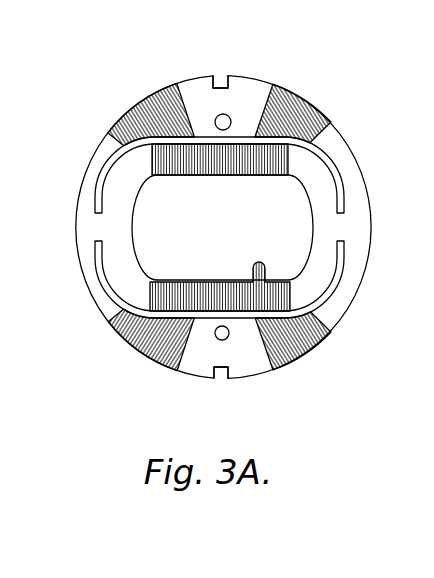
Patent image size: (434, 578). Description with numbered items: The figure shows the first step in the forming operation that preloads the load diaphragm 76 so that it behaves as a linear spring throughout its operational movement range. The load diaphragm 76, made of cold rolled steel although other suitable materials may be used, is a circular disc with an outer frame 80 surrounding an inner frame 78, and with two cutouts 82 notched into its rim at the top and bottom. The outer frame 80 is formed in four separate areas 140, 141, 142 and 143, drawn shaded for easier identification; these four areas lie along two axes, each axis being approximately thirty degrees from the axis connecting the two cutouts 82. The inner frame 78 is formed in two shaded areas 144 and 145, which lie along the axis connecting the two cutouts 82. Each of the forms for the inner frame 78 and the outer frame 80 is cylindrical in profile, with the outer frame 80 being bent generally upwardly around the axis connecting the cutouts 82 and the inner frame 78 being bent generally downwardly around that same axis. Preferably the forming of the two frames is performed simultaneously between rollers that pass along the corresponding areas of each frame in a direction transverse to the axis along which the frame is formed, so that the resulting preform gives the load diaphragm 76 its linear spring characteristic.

The load diaphragm 76 is at (136, 84).
The inner frame 78 is at (131, 263).
The outer frame 80 is at (256, 93).
The cutouts 82 is at (223, 86).
The formed area of outer frame 140 is at (137, 108).
The formed area of outer frame 141 is at (304, 109).
The formed area of outer frame 142 is at (297, 339).
The formed area of outer frame 143 is at (147, 338).
The formed area of inner frame 144 is at (276, 160).
The formed area of inner frame 145 is at (177, 293).